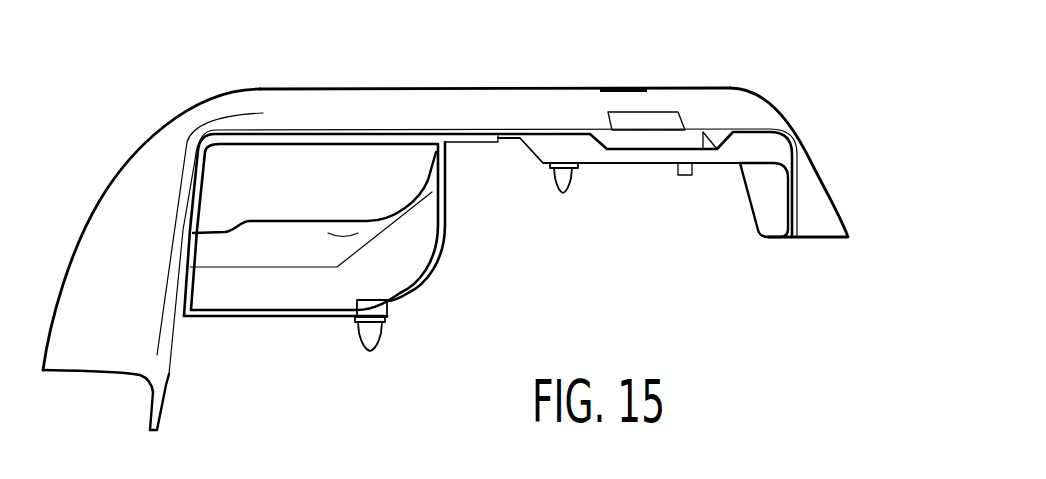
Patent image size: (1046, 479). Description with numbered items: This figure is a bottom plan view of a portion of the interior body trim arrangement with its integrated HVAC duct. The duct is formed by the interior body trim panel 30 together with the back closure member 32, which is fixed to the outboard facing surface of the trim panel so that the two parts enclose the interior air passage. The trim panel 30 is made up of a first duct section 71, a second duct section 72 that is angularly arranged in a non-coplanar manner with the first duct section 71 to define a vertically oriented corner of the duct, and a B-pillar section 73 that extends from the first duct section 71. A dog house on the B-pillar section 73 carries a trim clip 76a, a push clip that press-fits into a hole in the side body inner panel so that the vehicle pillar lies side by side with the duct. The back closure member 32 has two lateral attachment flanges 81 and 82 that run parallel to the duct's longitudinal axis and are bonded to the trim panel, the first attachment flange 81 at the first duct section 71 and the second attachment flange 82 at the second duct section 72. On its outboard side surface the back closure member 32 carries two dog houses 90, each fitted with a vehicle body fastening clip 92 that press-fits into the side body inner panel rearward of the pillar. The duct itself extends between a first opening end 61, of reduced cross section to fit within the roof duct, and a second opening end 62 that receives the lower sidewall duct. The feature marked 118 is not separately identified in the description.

The interior body trim panel 30 is at (445, 216).
The back closure member 32 is at (270, 317).
The first opening end 61 is at (325, 219).
The second opening end 62 is at (412, 273).
The first duct section 71 is at (313, 100).
The second duct section 72 is at (152, 182).
The B-pillar section 73 is at (582, 106).
The trim clip 76a is at (571, 184).
The first attachment flange 81 is at (473, 147).
The second attachment flange 82 is at (184, 340).
The dog house 90 is at (390, 305).
The vehicle body fastening clip 92 is at (371, 336).
The trim component 118 is at (669, 272).